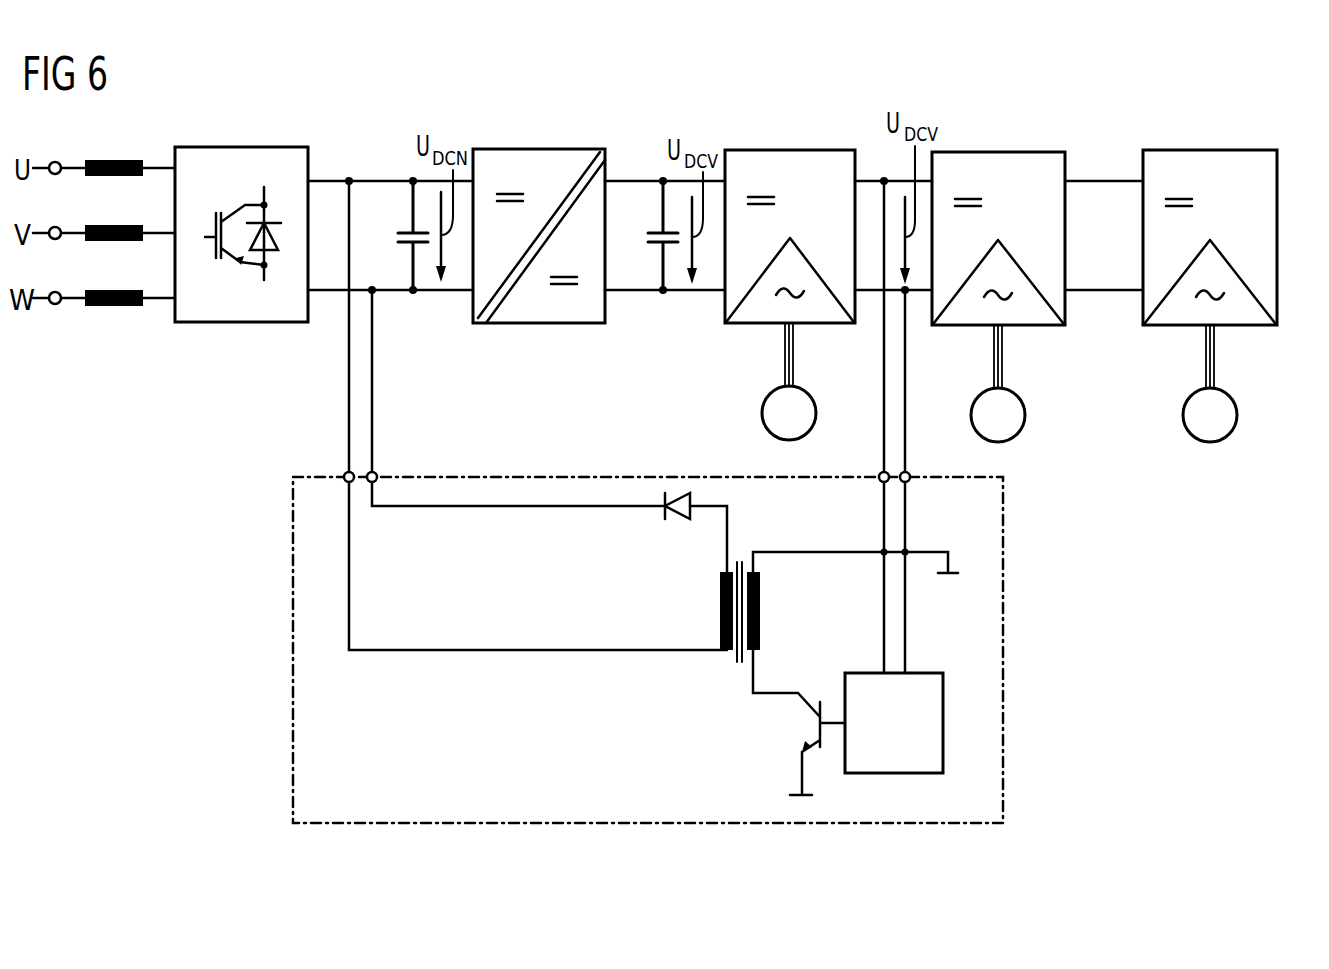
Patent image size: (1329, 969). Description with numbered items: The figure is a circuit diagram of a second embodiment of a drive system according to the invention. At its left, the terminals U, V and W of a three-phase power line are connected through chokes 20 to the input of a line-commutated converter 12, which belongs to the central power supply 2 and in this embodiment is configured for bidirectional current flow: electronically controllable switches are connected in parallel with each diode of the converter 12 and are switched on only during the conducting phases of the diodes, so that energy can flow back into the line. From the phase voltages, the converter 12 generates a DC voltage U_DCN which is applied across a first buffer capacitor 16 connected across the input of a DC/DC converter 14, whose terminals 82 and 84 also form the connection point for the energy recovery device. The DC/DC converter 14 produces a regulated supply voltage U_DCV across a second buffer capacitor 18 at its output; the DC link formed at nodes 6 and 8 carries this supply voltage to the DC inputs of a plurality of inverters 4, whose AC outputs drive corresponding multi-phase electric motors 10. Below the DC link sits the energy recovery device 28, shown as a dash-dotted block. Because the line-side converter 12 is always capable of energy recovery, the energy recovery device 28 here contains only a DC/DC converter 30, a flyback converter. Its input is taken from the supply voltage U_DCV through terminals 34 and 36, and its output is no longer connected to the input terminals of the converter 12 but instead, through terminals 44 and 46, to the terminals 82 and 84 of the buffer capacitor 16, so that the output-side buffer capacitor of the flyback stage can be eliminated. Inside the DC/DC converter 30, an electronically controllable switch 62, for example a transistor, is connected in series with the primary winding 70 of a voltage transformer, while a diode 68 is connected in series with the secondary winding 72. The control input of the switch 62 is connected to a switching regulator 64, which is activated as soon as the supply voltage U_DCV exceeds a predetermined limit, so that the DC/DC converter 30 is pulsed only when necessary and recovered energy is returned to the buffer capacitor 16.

The central power supply 2 is at (360, 94).
The inverter 4 is at (790, 150).
The positive DC link node 6 is at (663, 178).
The negative DC link node 8 is at (663, 293).
The multi-phase electric motor 10 is at (817, 413).
The line-commutated converter 12 is at (243, 147).
The DC/DC converter 14 is at (538, 149).
The first buffer capacitor 16 is at (410, 230).
The second buffer capacitor 18 is at (660, 232).
The choke 20 is at (110, 271).
The energy recovery device 28 is at (607, 477).
The DC/DC converter 30 is at (849, 645).
The output terminal 34 is at (878, 473).
The output terminal 36 is at (910, 473).
The input terminal 44 is at (343, 473).
The input terminal 46 is at (377, 473).
The electronically controllable switch 62 is at (808, 723).
The switching regulator 64 is at (945, 725).
The diode 68 is at (675, 521).
The secondary winding 70 is at (762, 611).
The secondary winding 72 is at (718, 611).
The terminal of the buffer capacitor 82 is at (413, 178).
The terminal of the buffer capacitor 84 is at (413, 293).